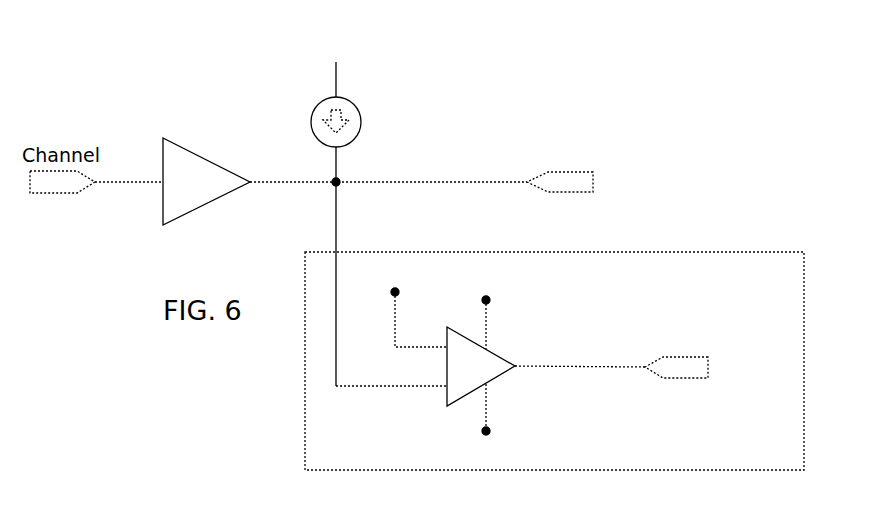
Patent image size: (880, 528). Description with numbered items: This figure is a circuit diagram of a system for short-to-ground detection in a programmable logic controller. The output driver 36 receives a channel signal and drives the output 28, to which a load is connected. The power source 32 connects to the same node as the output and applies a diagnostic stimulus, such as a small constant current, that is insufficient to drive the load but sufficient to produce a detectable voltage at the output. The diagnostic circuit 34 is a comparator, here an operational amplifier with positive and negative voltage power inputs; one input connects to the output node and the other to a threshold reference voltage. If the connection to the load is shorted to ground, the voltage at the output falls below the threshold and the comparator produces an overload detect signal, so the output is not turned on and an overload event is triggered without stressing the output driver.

The output 28 is at (570, 190).
The power source 32 is at (352, 128).
The diagnostic circuit 34 is at (305, 408).
The output driver 36 is at (206, 156).